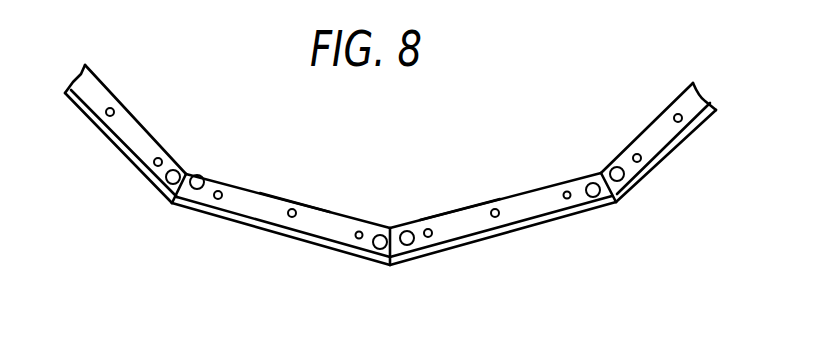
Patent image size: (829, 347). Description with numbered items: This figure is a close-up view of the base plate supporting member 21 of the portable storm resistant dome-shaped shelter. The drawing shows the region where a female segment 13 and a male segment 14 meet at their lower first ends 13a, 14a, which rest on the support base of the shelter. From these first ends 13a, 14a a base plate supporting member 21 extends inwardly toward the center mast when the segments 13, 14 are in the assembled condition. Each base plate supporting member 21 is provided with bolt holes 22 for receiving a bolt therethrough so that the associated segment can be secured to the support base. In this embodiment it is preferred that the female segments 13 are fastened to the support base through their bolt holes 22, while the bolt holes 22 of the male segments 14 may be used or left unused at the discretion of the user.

The female segment 13 is at (514, 234).
The lower end of female segment 13a is at (571, 213).
The male segment 14 is at (223, 217).
The lower end of male segment 14a is at (263, 229).
The base plate supporting member 21 is at (323, 228).
The bolt hole 22 is at (292, 209).